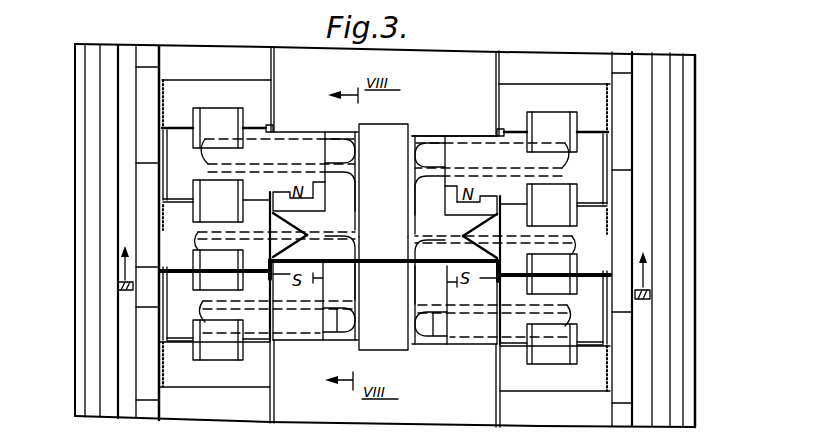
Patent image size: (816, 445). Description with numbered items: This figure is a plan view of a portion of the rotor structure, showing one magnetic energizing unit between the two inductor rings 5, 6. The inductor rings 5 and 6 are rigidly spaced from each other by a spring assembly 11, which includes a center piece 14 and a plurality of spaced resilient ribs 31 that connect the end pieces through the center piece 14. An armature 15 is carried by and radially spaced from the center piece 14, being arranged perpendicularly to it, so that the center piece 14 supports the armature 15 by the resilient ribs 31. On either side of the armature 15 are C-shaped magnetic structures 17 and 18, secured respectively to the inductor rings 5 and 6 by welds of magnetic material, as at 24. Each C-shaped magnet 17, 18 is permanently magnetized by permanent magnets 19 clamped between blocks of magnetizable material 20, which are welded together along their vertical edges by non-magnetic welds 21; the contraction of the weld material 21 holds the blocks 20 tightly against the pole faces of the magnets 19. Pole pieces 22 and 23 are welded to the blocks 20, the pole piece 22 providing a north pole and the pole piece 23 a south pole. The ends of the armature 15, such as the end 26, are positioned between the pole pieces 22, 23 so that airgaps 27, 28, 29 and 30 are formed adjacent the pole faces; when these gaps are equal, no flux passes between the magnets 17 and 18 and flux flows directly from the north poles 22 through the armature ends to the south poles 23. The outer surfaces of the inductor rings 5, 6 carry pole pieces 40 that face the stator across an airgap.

The inductor ring 5 is at (143, 122).
The inductor ring 6 is at (702, 131).
The spring assembly 11 is at (421, 134).
The center piece 14 is at (386, 117).
The armature 15 is at (388, 248).
The C-shaped magnetic structure 17 is at (296, 326).
The C-shaped magnetic structure 18 is at (472, 328).
The permanent magnet 19 is at (228, 123).
The block of magnetizable material 20 is at (260, 97).
The weld 21 is at (274, 129).
The pole piece 22 is at (321, 184).
The pole piece 23 is at (316, 293).
The weld 24 is at (165, 241).
The armature end 26 is at (269, 264).
The airgap 27 is at (308, 215).
The airgap 28 is at (314, 243).
The airgap 29 is at (474, 214).
The airgap 30 is at (454, 242).
The resilient rib 31 is at (337, 326).
The pole piece 40 is at (153, 79).